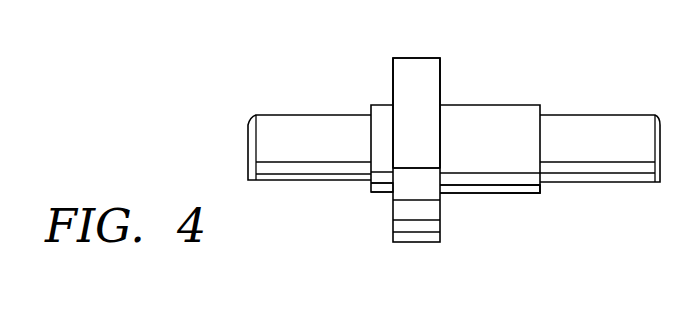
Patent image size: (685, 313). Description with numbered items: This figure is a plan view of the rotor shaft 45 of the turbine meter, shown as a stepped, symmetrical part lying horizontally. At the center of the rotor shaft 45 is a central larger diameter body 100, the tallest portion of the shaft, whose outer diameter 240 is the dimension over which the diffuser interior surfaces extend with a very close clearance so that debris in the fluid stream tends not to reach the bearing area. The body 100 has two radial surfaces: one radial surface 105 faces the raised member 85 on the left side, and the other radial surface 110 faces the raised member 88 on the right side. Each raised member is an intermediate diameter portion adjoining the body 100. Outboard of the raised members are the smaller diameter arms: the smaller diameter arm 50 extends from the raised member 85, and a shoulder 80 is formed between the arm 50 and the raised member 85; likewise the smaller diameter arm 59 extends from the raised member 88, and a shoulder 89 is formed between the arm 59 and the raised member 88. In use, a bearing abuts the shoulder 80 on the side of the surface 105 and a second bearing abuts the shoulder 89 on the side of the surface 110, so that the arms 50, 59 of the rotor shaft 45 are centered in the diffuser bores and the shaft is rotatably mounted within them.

The rotor shaft 45 is at (508, 112).
The smaller diameter arm 50 is at (290, 182).
The smaller diameter arm 59 is at (613, 185).
The shoulder 80 is at (367, 187).
The raised member 85 is at (383, 195).
The raised member 88 is at (478, 195).
The shoulder 89 is at (540, 192).
The central larger diameter body 100 is at (405, 66).
The radial surface 105 is at (393, 72).
The radial surface 110 is at (440, 73).
The outer diameter 240 is at (423, 60).